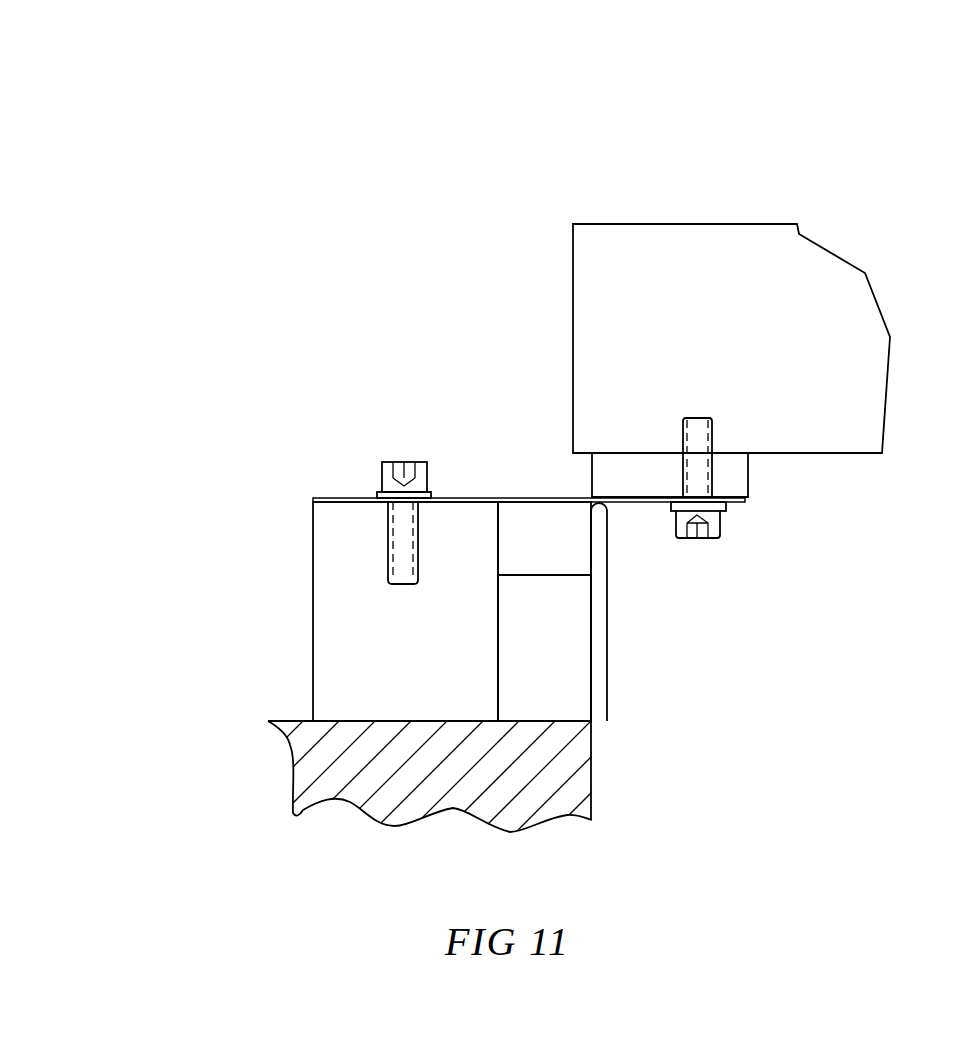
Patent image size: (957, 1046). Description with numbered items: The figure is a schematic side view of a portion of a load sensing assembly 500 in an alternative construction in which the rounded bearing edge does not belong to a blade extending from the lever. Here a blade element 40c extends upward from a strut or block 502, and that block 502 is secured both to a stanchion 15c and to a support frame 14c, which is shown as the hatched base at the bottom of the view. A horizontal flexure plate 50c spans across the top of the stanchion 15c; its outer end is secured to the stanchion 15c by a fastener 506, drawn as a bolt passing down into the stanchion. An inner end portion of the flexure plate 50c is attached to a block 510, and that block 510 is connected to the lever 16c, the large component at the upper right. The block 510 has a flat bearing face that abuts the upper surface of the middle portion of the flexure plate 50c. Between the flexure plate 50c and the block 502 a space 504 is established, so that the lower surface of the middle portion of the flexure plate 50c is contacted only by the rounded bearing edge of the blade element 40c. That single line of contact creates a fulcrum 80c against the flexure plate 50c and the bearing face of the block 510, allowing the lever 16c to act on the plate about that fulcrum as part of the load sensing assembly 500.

The load sensing assembly 500 is at (754, 300).
The lever 16c is at (731, 338).
The block 510 is at (750, 472).
The space 504 is at (522, 552).
The horizontal flexure plate 50c is at (482, 497).
The fastener 506 is at (380, 473).
The stanchion 15c is at (365, 515).
The strut or block 502 is at (312, 618).
The fulcrum 80c is at (643, 540).
The blade element 40c is at (612, 620).
The support frame 14c is at (362, 808).